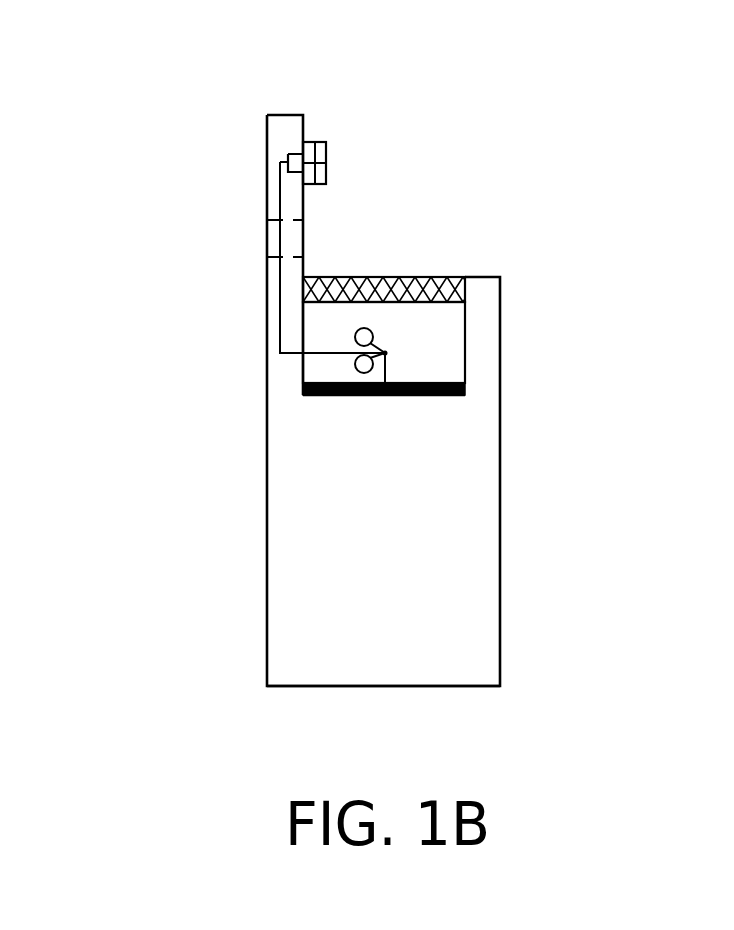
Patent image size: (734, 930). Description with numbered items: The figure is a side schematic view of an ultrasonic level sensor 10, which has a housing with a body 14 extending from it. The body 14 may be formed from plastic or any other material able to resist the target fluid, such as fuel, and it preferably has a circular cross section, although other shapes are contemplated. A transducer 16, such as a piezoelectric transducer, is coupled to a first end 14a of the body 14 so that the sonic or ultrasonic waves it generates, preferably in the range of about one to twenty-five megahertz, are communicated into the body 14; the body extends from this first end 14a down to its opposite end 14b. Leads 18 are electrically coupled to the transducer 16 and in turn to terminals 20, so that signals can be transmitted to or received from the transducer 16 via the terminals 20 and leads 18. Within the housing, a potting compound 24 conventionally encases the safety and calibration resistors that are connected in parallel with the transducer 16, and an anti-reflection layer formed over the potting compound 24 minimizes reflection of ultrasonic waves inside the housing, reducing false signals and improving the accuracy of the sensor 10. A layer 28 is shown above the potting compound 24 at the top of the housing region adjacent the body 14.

The sensor 10 is at (592, 163).
The body 14 is at (478, 563).
The first end of the body 14a is at (336, 404).
The lower end of housing 14b is at (316, 690).
The transducer 16 is at (465, 388).
The leads 18 is at (279, 193).
The terminals 20 is at (312, 141).
The potting compound 24 is at (432, 324).
The filter vent 28 is at (362, 277).